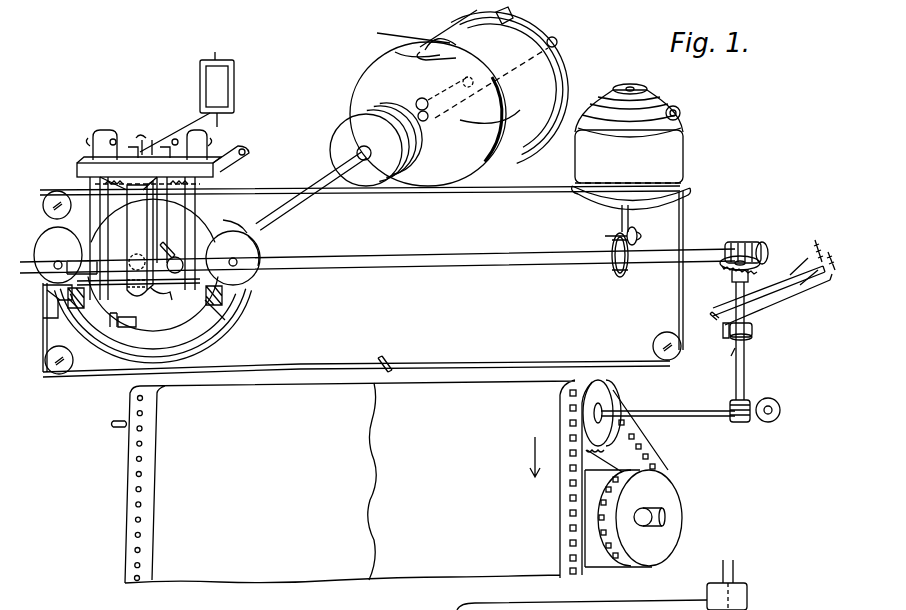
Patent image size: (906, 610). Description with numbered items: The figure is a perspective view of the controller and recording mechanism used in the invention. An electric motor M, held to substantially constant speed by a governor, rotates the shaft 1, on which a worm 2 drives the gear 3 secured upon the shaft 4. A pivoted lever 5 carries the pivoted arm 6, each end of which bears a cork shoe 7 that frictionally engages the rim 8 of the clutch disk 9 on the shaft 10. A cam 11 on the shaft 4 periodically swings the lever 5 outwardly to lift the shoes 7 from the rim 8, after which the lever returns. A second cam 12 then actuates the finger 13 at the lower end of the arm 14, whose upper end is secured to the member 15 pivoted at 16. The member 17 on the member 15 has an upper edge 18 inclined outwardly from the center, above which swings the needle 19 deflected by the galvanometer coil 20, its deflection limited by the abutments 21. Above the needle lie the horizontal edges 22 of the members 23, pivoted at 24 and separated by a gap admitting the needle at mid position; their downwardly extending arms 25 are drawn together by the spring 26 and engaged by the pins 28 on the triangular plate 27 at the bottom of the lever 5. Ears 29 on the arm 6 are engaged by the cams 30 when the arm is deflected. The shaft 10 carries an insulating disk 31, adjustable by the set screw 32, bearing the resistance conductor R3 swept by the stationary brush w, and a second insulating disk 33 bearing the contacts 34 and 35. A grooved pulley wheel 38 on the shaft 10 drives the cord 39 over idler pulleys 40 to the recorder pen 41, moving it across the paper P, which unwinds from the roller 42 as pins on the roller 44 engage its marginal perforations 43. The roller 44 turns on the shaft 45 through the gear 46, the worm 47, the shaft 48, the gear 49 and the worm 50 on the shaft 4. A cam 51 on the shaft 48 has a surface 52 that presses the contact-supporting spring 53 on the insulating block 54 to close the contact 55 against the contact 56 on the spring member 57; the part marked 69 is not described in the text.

The shaft 1 is at (615, 222).
The worm 2 is at (638, 237).
The gear 3 is at (626, 272).
The shaft 4 is at (715, 247).
The lever 5 is at (133, 228).
The arm 6 is at (228, 284).
The shoe 7 is at (222, 297).
The rim 8 is at (205, 320).
The clutch disk 9 is at (210, 345).
The shaft 10 is at (300, 202).
The cam 11 is at (130, 258).
The second cam 12 is at (175, 240).
The finger 13 is at (168, 292).
The arm 14 is at (243, 214).
The member 15 is at (80, 168).
The pivot 16 is at (243, 150).
The member 17 is at (138, 145).
The upper edge 18 is at (155, 145).
The needle 19 is at (143, 145).
The coil 20 is at (232, 90).
The abutments 21 is at (130, 145).
The edges 22 is at (92, 135).
The members 23 is at (175, 138).
The pivots 24 is at (210, 140).
The arms 25 is at (88, 185).
The spring 26 is at (200, 185).
The triangular plate 27 is at (128, 318).
The pins 28 is at (113, 318).
The ears 29 is at (43, 318).
The cams 30 is at (45, 240).
The disk 31 is at (365, 93).
The set screw 32 is at (418, 101).
The second disk 33 is at (540, 88).
The contact 34 is at (550, 105).
The contact 35 is at (508, 16).
The grooved pulley wheel 38 is at (330, 148).
The cord 39 is at (250, 180).
The idler pulleys 40 is at (50, 205).
The recorder pen 41 is at (386, 382).
The roller 42 is at (672, 505).
The marginal perforations 43 is at (565, 512).
The roller 44 is at (608, 392).
The shaft 45 is at (113, 425).
The gear 46 is at (774, 404).
The worm 47 is at (742, 424).
The shaft 48 is at (746, 365).
The gear 49 is at (732, 274).
The worm 50 is at (746, 241).
The cam 51 is at (737, 348).
The cam surface 52 is at (754, 332).
The contact-supporting spring 53 is at (790, 300).
The insulating block 54 is at (802, 252).
The contact 55 is at (722, 333).
The contact 56 is at (710, 316).
The spring member 57 is at (768, 280).
The bearing 69 is at (748, 600).
The electric motor M is at (683, 152).
The recorder paper P is at (152, 485).
The resistance conductor R3 is at (392, 52).
The stationary brush w is at (432, 36).